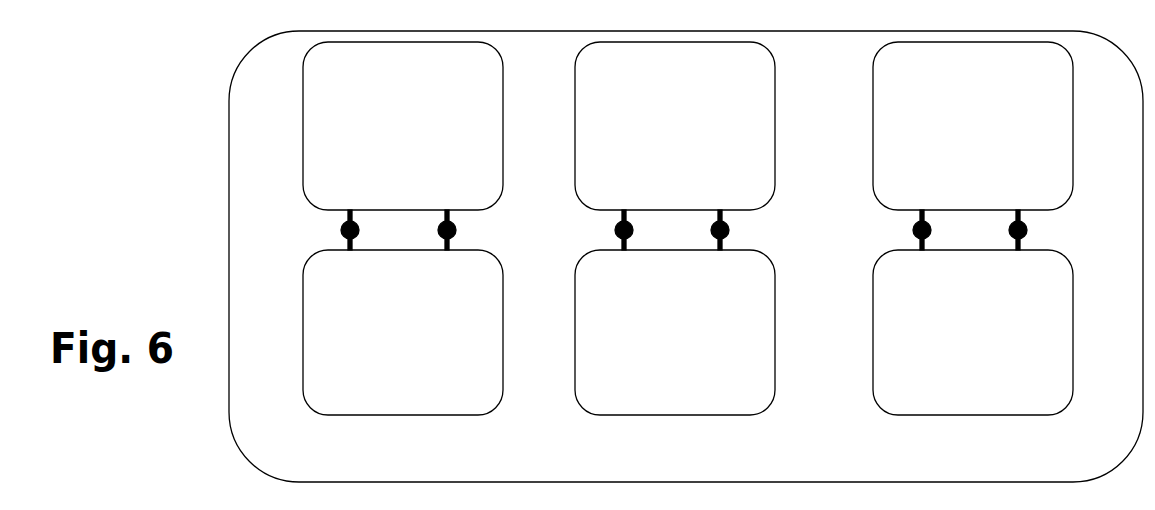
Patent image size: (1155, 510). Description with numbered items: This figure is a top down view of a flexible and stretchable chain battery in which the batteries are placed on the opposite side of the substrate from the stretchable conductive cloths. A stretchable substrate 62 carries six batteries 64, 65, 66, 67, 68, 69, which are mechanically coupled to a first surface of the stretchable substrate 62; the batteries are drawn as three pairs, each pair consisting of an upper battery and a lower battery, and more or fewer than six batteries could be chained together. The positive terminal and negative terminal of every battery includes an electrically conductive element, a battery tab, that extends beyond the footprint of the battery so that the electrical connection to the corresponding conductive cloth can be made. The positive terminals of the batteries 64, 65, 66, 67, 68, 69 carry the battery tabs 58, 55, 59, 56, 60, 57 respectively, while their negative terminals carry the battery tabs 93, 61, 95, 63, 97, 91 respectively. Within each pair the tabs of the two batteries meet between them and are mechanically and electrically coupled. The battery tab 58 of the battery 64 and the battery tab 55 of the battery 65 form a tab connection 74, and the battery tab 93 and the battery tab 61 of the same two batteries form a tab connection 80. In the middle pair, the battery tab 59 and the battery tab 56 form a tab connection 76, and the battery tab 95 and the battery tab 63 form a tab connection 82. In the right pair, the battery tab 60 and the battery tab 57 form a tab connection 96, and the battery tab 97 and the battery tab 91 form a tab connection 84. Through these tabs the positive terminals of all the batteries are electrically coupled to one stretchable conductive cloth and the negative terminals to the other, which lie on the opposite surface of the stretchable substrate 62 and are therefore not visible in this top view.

The stretchable substrate 62 is at (254, 422).
The battery 64 is at (372, 408).
The battery 66 is at (645, 408).
The battery 68 is at (935, 408).
The battery 65 is at (311, 151).
The battery 67 is at (586, 151).
The battery 69 is at (882, 151).
The battery tab 55 is at (348, 215).
The battery tab 56 is at (622, 215).
The battery tab 57 is at (920, 215).
The battery tab 58 is at (347, 249).
The battery tab 59 is at (621, 249).
The battery tab 60 is at (919, 249).
The tab connection 74 is at (341, 231).
The tab connection 76 is at (615, 231).
The tab connection 96 is at (913, 231).
The battery tab 61 is at (444, 216).
The battery tab 63 is at (717, 216).
The battery tab 91 is at (1015, 216).
The battery tab 93 is at (451, 244).
The battery tab 95 is at (724, 244).
The battery tab 97 is at (1022, 244).
The tab connection 80 is at (456, 229).
The tab connection 82 is at (729, 229).
The tab connection 84 is at (1027, 229).